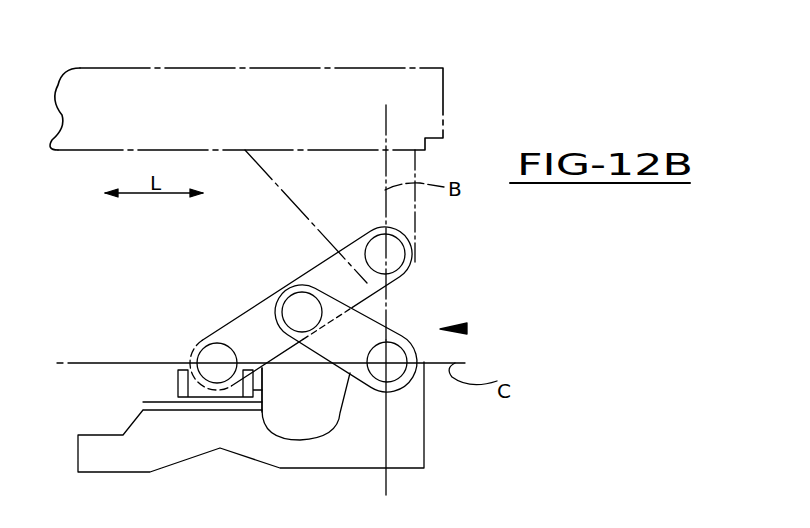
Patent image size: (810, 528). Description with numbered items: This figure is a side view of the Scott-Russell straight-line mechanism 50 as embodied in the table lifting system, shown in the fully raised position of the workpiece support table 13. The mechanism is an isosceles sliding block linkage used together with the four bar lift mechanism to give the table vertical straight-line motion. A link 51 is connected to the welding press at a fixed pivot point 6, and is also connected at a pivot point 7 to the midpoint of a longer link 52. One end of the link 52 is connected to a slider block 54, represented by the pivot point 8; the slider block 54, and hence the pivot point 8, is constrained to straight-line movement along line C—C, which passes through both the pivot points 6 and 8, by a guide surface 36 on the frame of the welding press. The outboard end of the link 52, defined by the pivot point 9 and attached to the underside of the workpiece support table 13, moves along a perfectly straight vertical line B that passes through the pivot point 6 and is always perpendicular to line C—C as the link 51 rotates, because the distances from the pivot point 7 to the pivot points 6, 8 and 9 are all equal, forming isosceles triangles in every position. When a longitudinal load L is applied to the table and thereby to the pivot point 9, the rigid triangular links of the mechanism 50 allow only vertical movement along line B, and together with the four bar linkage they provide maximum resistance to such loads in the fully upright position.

The workpiece support table 13 is at (310, 75).
The guide surface 36 is at (157, 381).
The slider block 54 is at (183, 372).
The link 52 is at (378, 302).
The link 51 is at (313, 352).
The Scott-Russell straight-line mechanism 50 is at (462, 329).
The pivot point 8 is at (217, 367).
The pivot point 7 is at (300, 310).
The pivot point 9 is at (386, 254).
The pivot point 6 is at (407, 380).